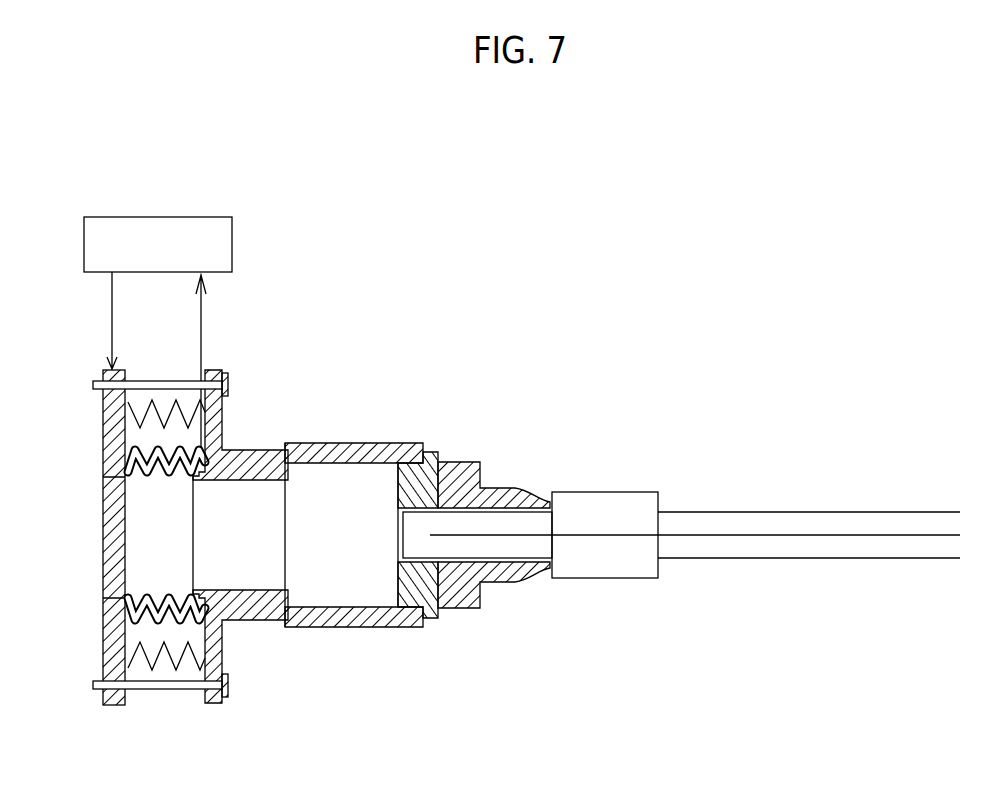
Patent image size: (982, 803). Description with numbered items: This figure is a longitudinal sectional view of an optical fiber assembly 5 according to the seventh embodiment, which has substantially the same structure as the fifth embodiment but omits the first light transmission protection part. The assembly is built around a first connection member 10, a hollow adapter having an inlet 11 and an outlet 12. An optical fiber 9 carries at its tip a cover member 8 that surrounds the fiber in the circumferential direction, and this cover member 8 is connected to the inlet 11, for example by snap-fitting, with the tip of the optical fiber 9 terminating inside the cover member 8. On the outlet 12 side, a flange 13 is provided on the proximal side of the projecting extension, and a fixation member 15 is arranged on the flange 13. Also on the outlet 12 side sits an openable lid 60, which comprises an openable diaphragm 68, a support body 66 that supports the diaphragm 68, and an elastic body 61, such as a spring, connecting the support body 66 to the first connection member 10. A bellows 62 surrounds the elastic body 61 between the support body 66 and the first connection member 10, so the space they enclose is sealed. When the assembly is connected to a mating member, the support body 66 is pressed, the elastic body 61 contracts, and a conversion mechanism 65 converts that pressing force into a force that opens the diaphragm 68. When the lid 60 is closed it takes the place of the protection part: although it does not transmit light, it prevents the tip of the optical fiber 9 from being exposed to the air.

The optical fiber assembly 5 is at (692, 313).
The cover member 8 is at (493, 510).
The optical fiber 9 is at (803, 512).
The first connection member 10 is at (552, 313).
The inlet 11 is at (553, 494).
The outlet 12 is at (178, 540).
The flange 13 is at (216, 369).
The fixation member 15 is at (229, 385).
The lid 60 is at (202, 303).
The elastic body 61 is at (160, 432).
The bellows 62 is at (163, 450).
The conversion mechanism 65 is at (232, 246).
The support body 66 is at (85, 566).
The diaphragm 68 is at (94, 475).